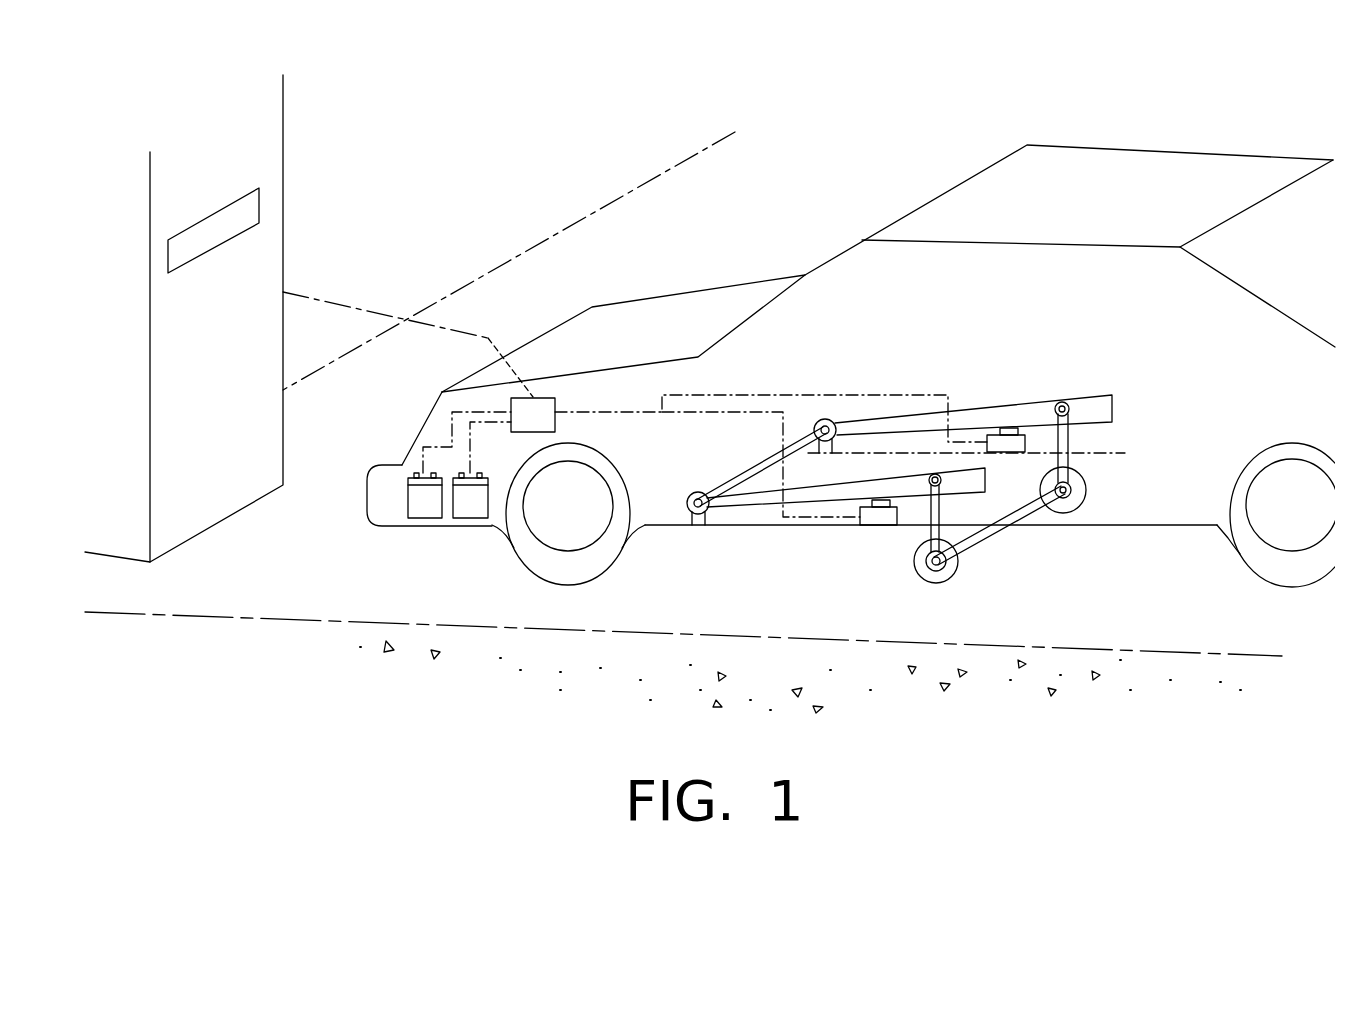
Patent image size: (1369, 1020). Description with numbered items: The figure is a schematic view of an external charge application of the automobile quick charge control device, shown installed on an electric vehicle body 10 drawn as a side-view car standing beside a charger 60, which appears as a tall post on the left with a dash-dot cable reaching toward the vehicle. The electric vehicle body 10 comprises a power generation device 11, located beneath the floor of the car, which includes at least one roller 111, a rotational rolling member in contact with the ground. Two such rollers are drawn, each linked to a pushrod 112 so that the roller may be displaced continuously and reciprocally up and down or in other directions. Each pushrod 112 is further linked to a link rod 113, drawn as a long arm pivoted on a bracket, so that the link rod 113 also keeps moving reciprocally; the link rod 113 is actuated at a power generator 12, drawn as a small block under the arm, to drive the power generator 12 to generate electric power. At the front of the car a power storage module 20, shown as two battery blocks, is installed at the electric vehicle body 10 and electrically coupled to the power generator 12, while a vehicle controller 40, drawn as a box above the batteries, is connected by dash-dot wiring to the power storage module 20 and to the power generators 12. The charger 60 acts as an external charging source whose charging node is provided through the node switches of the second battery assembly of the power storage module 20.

The electric vehicle body 10 is at (827, 250).
The power generation device 11 is at (822, 555).
The power generator 12 is at (1000, 429).
The power storage module 20 is at (457, 532).
The vehicle controller 40 is at (550, 374).
The charger 60 is at (238, 522).
The roller 111 is at (1072, 502).
The pushrod 112 is at (1068, 438).
The link rod 113 is at (1093, 405).